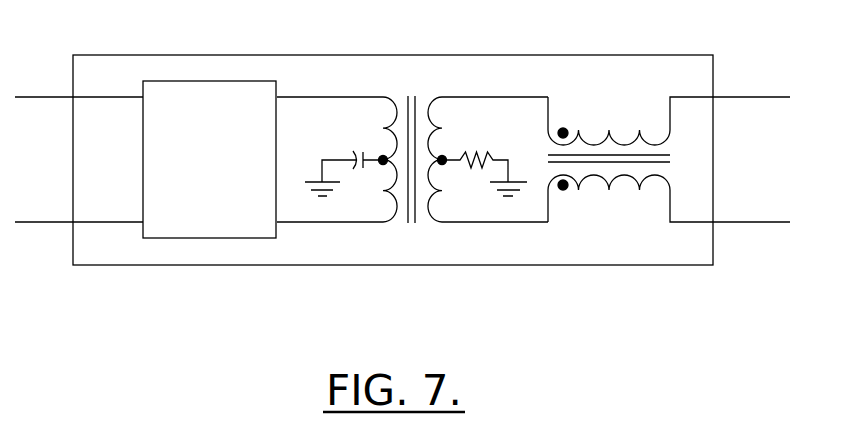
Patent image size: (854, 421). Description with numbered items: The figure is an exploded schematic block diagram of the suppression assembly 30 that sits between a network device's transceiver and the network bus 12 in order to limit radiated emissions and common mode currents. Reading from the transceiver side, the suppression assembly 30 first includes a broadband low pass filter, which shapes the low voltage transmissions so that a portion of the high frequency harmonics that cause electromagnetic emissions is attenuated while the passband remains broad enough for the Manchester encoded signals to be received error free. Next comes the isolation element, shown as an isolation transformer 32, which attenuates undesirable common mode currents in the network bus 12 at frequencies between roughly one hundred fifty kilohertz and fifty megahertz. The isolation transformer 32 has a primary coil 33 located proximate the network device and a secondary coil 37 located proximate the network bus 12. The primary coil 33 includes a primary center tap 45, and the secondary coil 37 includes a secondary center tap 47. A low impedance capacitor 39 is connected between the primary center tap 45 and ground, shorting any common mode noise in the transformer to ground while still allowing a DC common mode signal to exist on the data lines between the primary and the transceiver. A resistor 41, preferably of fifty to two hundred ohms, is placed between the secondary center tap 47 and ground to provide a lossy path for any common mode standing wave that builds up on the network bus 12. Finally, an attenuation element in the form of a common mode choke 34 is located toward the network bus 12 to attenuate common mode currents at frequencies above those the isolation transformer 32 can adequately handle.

The network bus 12 is at (750, 222).
The suppression assembly 30 is at (212, 81).
The isolation transformer 32 is at (410, 175).
The primary coil 33 is at (388, 221).
The secondary coil 37 is at (432, 221).
The primary center tap 45 is at (381, 158).
The secondary center tap 47 is at (444, 158).
The low impedance capacitor 39 is at (357, 173).
The resistor 41 is at (477, 173).
The common mode choke 34 is at (612, 92).